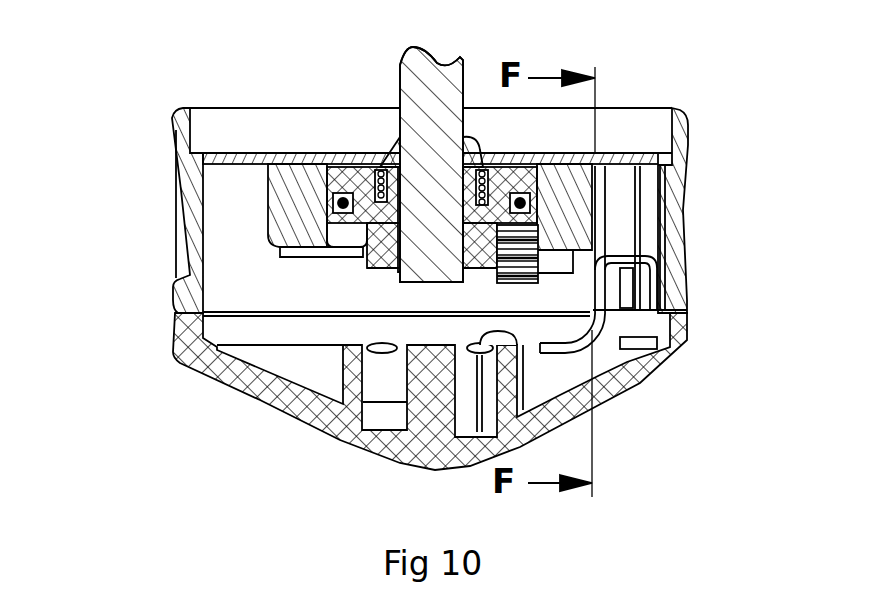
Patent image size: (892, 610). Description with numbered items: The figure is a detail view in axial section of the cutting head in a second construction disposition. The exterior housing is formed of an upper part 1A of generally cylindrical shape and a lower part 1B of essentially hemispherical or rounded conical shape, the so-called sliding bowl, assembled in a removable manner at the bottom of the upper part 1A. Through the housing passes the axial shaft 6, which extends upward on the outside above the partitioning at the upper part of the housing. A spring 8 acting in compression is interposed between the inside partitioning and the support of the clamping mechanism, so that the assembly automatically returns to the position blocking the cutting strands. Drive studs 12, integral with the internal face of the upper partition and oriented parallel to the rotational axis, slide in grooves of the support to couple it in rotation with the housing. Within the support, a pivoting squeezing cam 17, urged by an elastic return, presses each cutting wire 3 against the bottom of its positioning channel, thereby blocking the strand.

The upper part 1A is at (680, 140).
The lower part 1B is at (323, 410).
The cutting wire 3 is at (340, 201).
The axial shaft 6 is at (432, 172).
The spring 8 is at (395, 160).
The drive studs 12 is at (290, 253).
The squeezing cam 17 is at (540, 278).